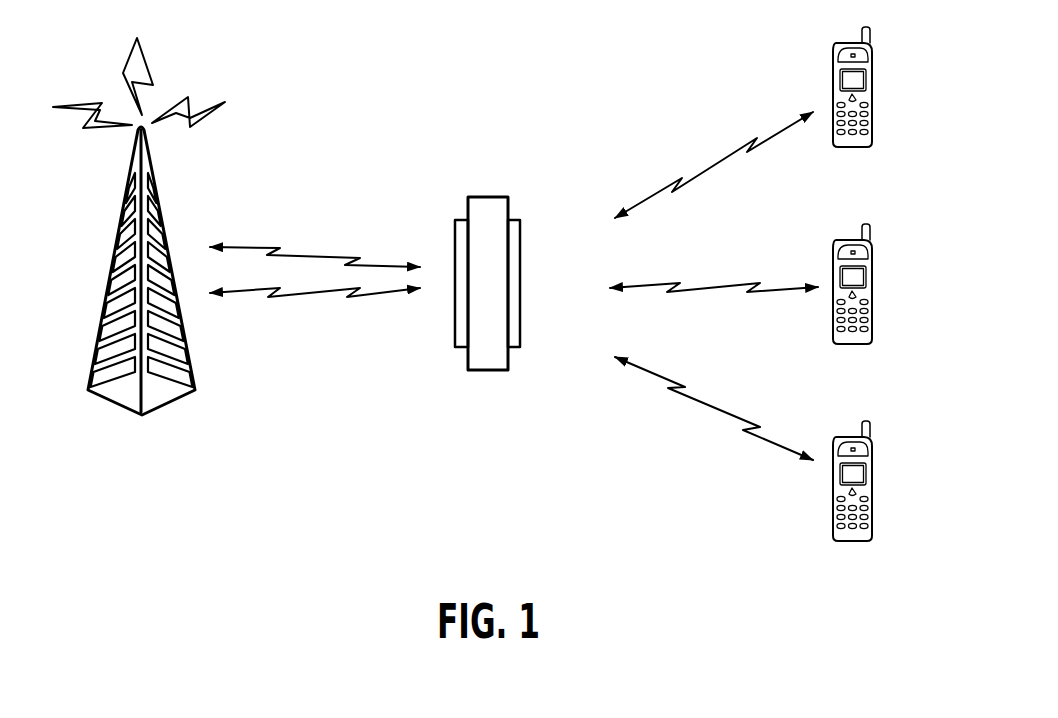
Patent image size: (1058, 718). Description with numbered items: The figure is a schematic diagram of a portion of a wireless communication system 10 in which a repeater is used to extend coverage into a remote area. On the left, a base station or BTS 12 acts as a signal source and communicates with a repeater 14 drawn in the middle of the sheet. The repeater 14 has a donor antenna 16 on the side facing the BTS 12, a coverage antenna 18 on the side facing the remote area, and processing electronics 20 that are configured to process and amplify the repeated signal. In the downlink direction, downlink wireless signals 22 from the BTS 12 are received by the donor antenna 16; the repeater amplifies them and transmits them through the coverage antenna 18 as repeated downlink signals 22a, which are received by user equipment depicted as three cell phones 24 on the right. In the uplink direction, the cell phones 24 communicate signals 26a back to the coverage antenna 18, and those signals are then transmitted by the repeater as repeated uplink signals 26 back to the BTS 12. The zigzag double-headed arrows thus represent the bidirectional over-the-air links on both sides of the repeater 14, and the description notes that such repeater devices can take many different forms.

The wireless communication system 10 is at (586, 63).
The base station 12 is at (158, 193).
The repeater 14 is at (507, 125).
The donor antenna 16 is at (455, 238).
The coverage antenna 18 is at (520, 272).
The processing electronics 20 is at (507, 196).
The downlink wireless signals 22 is at (325, 256).
The repeated uplink signals 26 is at (312, 292).
The repeated downlink signals 22a is at (728, 155).
The uplink signals 26a is at (700, 287).
The cell phones 24 is at (872, 92).